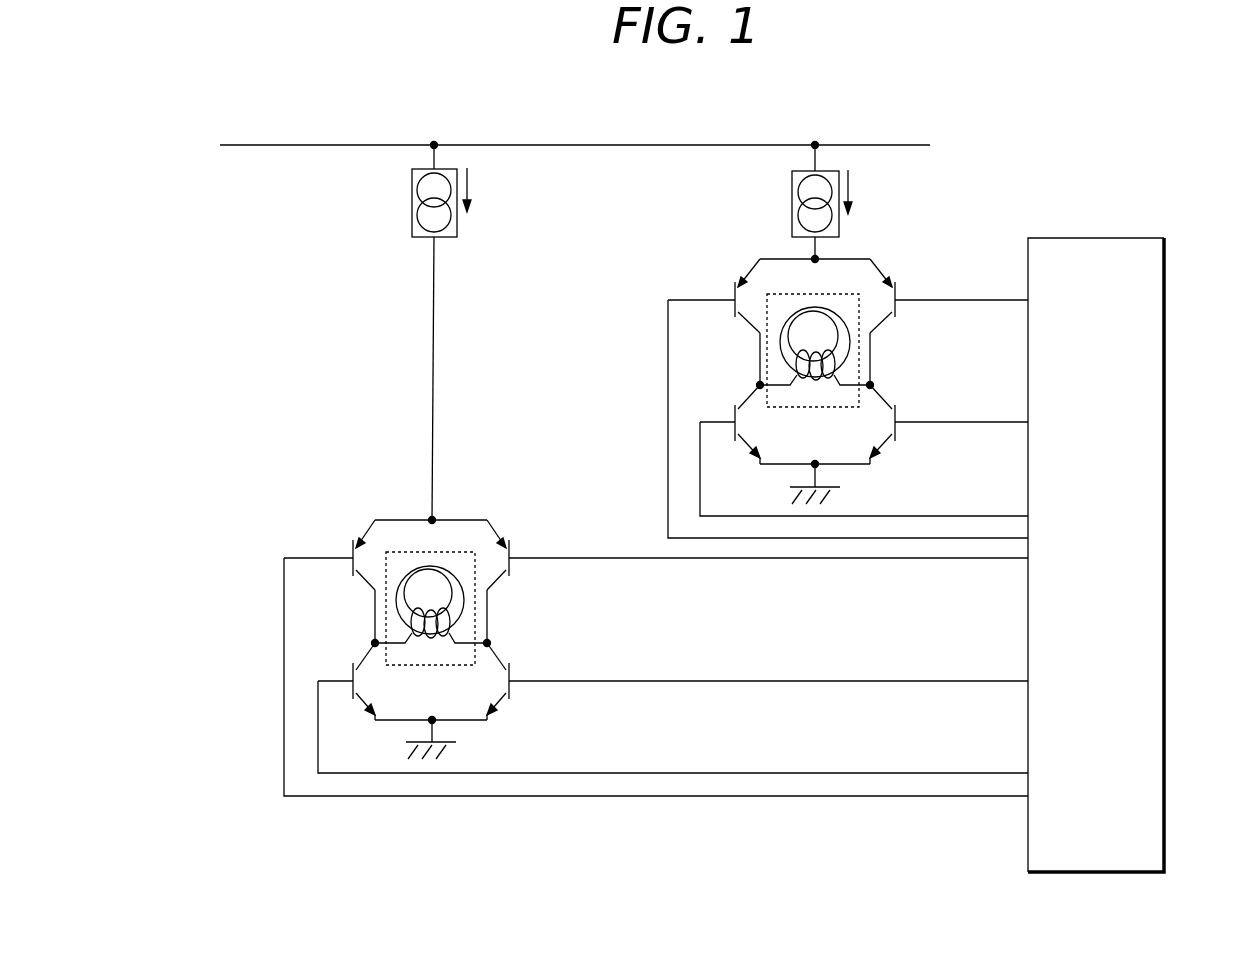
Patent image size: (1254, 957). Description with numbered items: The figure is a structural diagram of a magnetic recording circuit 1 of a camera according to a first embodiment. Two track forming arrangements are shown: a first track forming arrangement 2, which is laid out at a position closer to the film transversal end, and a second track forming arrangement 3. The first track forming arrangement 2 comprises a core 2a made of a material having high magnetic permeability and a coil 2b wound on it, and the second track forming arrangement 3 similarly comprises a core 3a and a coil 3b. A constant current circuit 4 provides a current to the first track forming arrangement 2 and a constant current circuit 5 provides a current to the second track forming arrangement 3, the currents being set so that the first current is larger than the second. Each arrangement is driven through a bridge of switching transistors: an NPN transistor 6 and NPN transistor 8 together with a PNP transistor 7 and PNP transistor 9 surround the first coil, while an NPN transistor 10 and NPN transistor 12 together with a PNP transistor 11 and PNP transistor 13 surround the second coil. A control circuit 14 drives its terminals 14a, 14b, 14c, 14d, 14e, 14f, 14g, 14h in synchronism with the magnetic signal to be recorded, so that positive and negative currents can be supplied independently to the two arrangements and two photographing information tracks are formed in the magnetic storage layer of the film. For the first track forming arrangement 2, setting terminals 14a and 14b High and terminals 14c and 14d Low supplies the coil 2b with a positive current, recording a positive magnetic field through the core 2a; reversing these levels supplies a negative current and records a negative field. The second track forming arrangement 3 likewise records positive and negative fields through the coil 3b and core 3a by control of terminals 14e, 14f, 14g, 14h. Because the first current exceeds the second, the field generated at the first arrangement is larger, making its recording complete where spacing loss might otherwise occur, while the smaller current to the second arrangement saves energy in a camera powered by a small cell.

The magnetic recording circuit 1 is at (1060, 180).
The first track forming arrangement 2 is at (835, 293).
The core 2a is at (850, 352).
The coil 2b is at (832, 378).
The second track forming arrangement 3 is at (446, 551).
The core 3a is at (463, 612).
The coil 3b is at (447, 636).
The constant current circuit 4 is at (792, 206).
The constant current circuit 5 is at (412, 206).
The NPN transistor 6 is at (714, 322).
The PNP transistor 7 is at (891, 424).
The NPN transistor 8 is at (891, 322).
The PNP transistor 9 is at (730, 424).
The NPN transistor 10 is at (329, 581).
The PNP transistor 11 is at (513, 681).
The NPN transistor 12 is at (513, 581).
The PNP transistor 13 is at (346, 681).
The control circuit 14 is at (1165, 283).
The terminal 14a is at (984, 298).
The terminal 14b is at (984, 421).
The terminal 14c is at (886, 474).
The terminal 14d is at (870, 426).
The terminal 14e is at (791, 562).
The terminal 14f is at (791, 681).
The terminal 14g is at (695, 734).
The terminal 14h is at (678, 685).